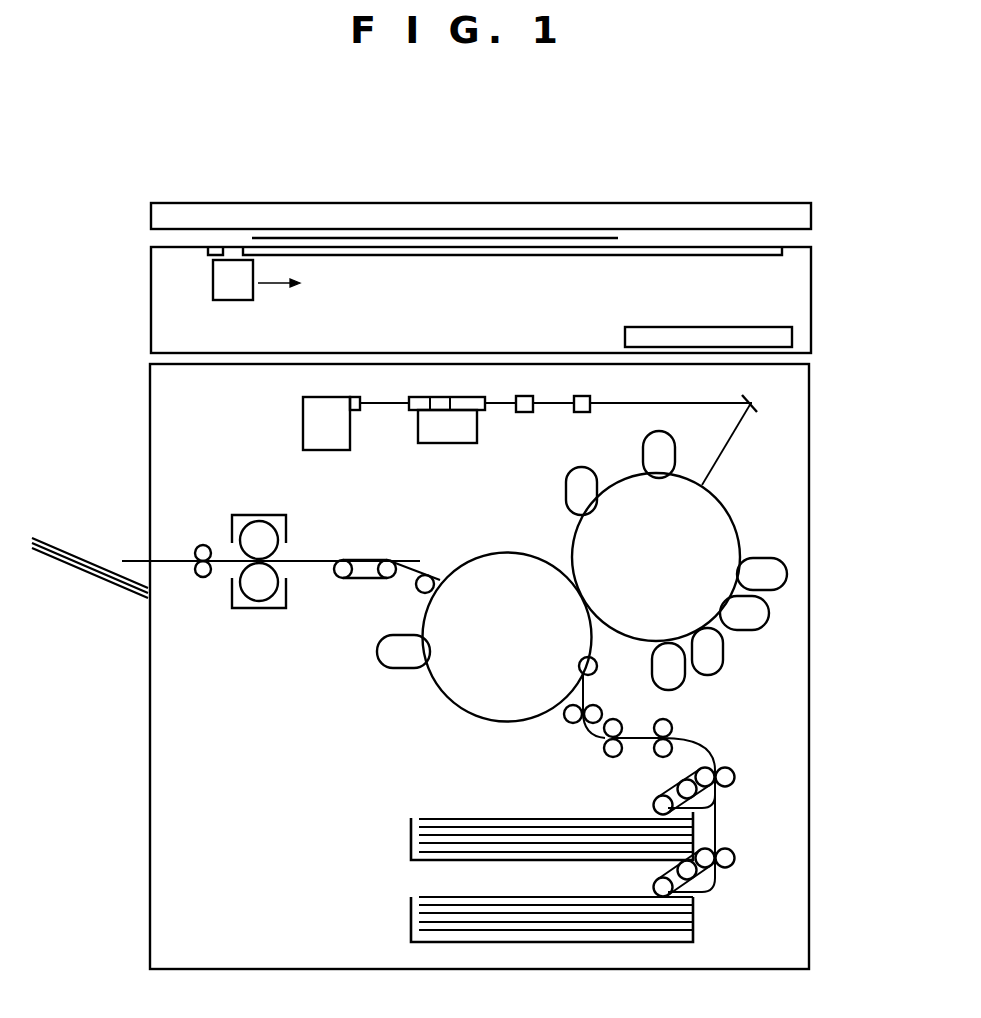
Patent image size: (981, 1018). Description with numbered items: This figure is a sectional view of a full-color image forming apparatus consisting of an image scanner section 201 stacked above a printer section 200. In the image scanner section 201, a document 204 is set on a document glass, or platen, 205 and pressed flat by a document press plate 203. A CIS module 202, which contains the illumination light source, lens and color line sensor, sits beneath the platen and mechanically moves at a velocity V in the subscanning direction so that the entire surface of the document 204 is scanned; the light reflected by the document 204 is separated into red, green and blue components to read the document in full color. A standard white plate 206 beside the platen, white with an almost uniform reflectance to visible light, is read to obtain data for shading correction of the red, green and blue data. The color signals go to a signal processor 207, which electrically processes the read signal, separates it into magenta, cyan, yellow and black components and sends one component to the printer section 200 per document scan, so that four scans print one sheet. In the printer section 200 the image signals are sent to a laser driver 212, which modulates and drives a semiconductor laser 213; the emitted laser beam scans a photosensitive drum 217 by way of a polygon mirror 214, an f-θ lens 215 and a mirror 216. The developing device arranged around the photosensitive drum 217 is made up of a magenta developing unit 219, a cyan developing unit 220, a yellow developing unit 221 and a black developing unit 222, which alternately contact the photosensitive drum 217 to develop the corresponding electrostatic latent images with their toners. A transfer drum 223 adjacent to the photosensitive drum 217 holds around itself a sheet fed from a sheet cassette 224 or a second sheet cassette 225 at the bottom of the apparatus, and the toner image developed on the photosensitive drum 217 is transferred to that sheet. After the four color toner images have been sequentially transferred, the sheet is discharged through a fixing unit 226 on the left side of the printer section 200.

The printer section 200 is at (809, 755).
The image scanner section 201 is at (811, 262).
The CIS module 202 is at (213, 283).
The document press plate 203 is at (760, 203).
The document 204 is at (377, 237).
The document glass (platen) 205 is at (648, 247).
The standard white plate 206 is at (218, 252).
The signal processor 207 is at (792, 337).
The laser driver 212 is at (303, 420).
The semiconductor laser 213 is at (355, 412).
The polygon mirror 214 is at (448, 443).
The f-θ lens 215 is at (523, 412).
The mirror 216 is at (767, 395).
The photosensitive drum 217 is at (725, 508).
The magenta developing unit 219 is at (723, 652).
The cyan developing unit 220 is at (769, 612).
The yellow developing unit 221 is at (787, 572).
The black developing unit 222 is at (685, 685).
The transfer drum 223 is at (507, 722).
The sheet cassette 224 is at (411, 835).
The sheet cassette 225 is at (411, 918).
The fixing unit 226 is at (259, 608).